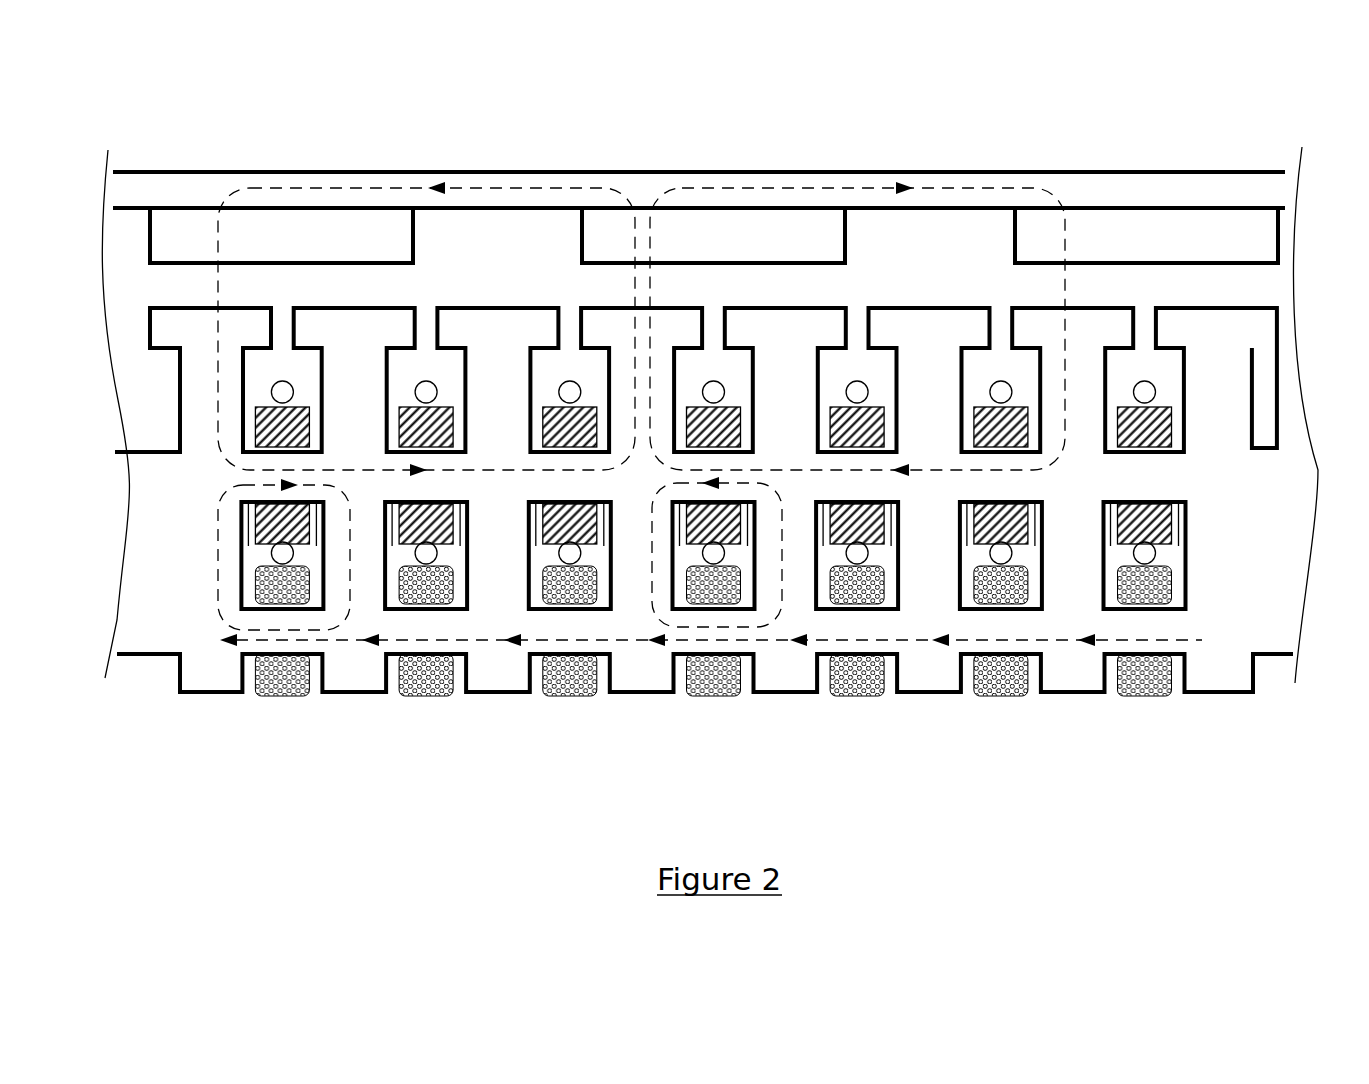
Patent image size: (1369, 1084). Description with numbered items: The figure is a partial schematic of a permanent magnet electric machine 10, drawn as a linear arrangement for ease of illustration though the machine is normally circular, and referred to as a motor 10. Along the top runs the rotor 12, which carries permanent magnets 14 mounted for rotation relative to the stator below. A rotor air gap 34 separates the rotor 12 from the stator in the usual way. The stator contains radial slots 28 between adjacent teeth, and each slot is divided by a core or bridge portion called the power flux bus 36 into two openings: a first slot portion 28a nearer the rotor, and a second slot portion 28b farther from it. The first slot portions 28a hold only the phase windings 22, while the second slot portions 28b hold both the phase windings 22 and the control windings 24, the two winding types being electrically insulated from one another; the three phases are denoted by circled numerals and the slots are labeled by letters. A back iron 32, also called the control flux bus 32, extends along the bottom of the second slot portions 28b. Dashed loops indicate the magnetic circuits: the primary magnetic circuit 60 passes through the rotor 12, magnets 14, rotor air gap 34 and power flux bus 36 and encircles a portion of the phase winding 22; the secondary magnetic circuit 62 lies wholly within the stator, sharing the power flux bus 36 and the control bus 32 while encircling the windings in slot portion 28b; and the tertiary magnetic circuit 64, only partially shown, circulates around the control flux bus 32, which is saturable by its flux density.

The permanent magnet electric machine 10 is at (125, 143).
The rotor 12 is at (1223, 178).
The permanent magnets 14 is at (178, 247).
The rotor air gap 34 is at (1223, 283).
The radial slots 28 is at (258, 365).
The first slot portion 28a is at (242, 378).
The primary magnetic circuit 60 is at (217, 432).
The power flux bus 36 is at (267, 462).
The second slot portion 28b is at (242, 535).
The secondary magnetic circuit 62 is at (218, 562).
The back iron 32 is at (258, 620).
The tertiary magnetic circuit 64 is at (285, 640).
The phase winding 22 is at (1175, 532).
The control winding 24 is at (1175, 672).